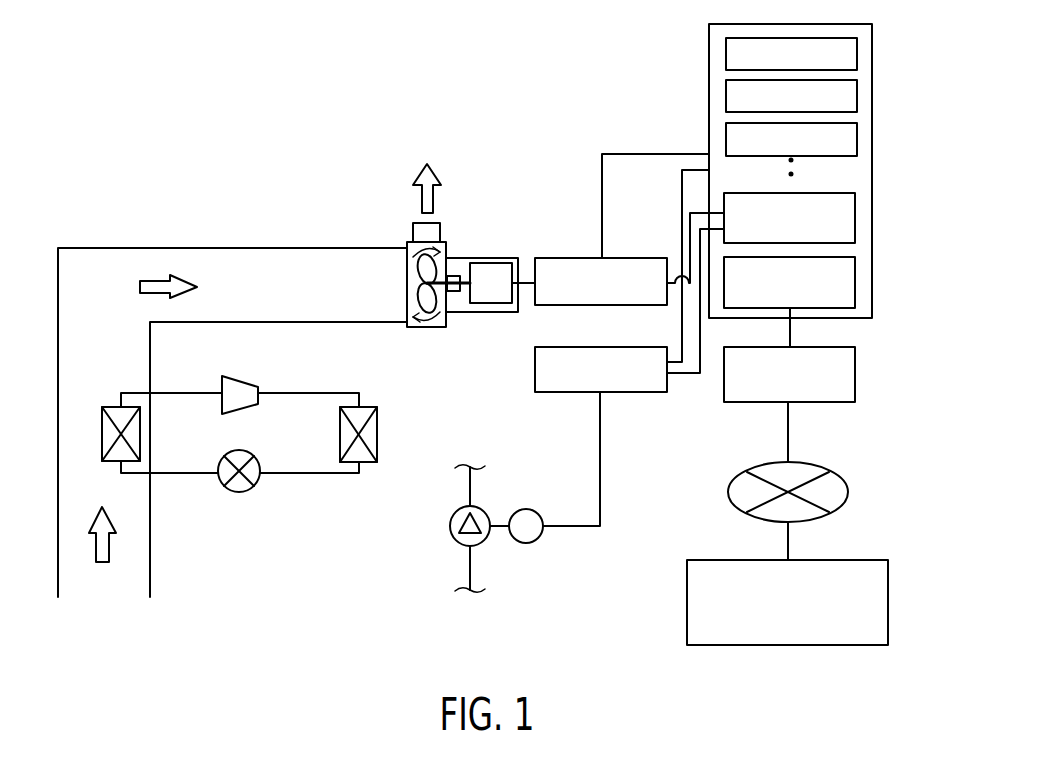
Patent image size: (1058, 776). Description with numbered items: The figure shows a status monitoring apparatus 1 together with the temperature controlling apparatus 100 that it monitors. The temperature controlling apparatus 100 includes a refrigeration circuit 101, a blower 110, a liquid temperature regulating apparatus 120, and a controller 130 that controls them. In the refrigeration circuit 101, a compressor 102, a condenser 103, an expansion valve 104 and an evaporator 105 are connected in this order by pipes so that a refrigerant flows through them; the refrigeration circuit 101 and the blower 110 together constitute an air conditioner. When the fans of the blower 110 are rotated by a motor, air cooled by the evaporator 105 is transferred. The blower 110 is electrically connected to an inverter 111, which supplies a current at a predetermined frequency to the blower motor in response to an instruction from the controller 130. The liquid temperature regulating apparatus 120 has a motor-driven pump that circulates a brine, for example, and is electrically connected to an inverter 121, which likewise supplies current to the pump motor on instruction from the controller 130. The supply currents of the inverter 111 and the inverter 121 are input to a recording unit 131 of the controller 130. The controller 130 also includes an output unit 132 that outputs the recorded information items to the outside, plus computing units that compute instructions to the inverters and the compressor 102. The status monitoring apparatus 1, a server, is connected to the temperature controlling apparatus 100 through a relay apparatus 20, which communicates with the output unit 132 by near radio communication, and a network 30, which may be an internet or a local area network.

The status monitoring apparatus 1 is at (890, 602).
The relay apparatus 20 is at (857, 370).
The network 30 is at (850, 492).
The temperature controlling apparatus 100 is at (246, 140).
The refrigeration circuit 101 is at (394, 408).
The compressor 102 is at (243, 377).
The condenser 103 is at (379, 433).
The expansion valve 104 is at (240, 493).
The evaporator 105 is at (113, 398).
The blower 110 is at (474, 237).
The inverter 111 is at (565, 256).
The liquid temperature regulating apparatus 120 is at (506, 556).
The inverter 121 is at (565, 396).
The controller 130 is at (874, 50).
The recording unit 131 is at (857, 213).
The output unit 132 is at (857, 283).